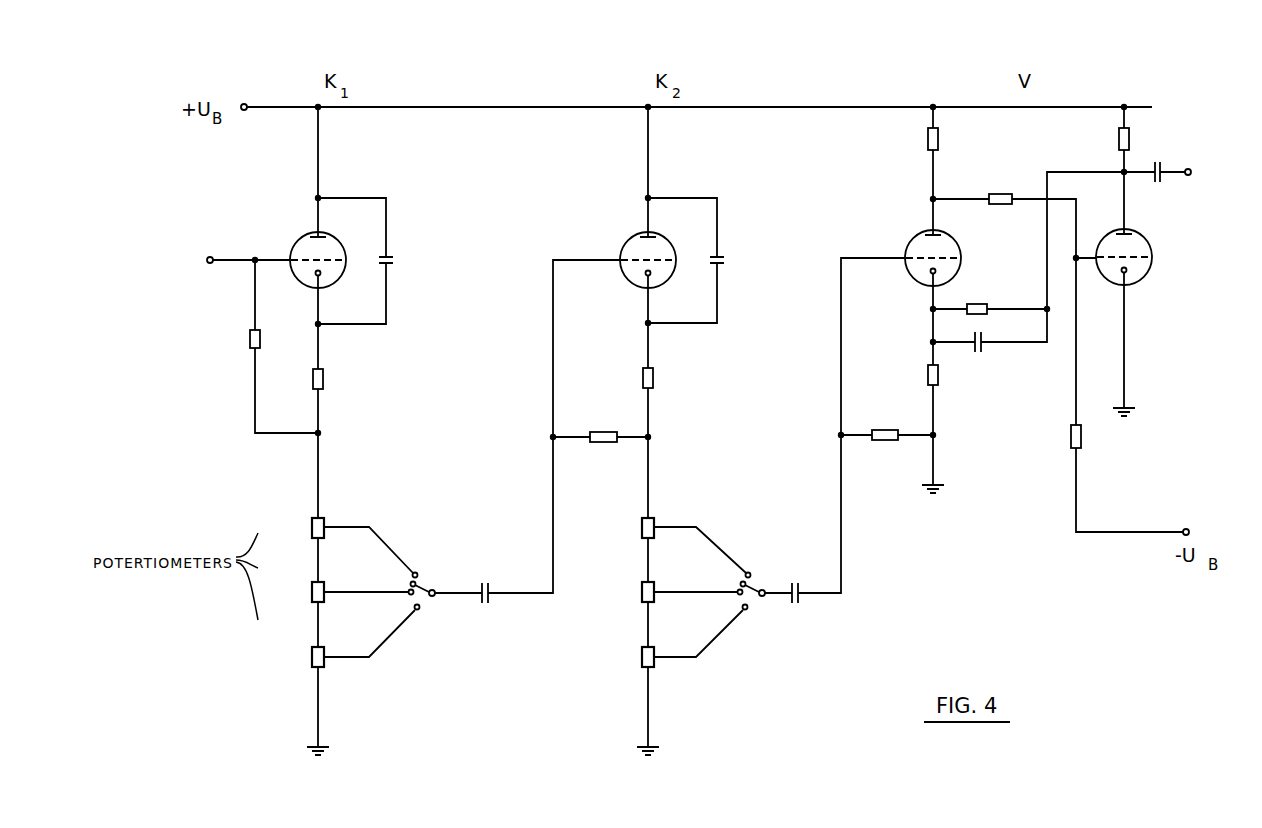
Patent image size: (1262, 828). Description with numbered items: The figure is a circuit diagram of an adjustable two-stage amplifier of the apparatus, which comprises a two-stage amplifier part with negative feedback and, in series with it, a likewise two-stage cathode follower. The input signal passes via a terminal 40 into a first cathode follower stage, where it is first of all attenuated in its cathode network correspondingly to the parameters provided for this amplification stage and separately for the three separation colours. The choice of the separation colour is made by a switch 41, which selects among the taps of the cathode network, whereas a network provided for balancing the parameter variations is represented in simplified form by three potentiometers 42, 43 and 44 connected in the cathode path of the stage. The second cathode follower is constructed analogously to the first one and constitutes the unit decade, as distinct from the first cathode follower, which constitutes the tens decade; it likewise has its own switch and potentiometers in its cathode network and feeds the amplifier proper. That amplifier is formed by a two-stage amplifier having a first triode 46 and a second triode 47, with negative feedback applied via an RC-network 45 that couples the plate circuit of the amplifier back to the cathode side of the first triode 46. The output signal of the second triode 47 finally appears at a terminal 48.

The terminal 40 is at (209, 258).
The switch 41 is at (434, 584).
The potentiometer 42 is at (309, 527).
The potentiometer 43 is at (310, 595).
The potentiometer 44 is at (310, 656).
The RC-network 45 is at (983, 332).
The triode 46 is at (920, 250).
The triode 47 is at (1138, 251).
The terminal 48 is at (1192, 175).